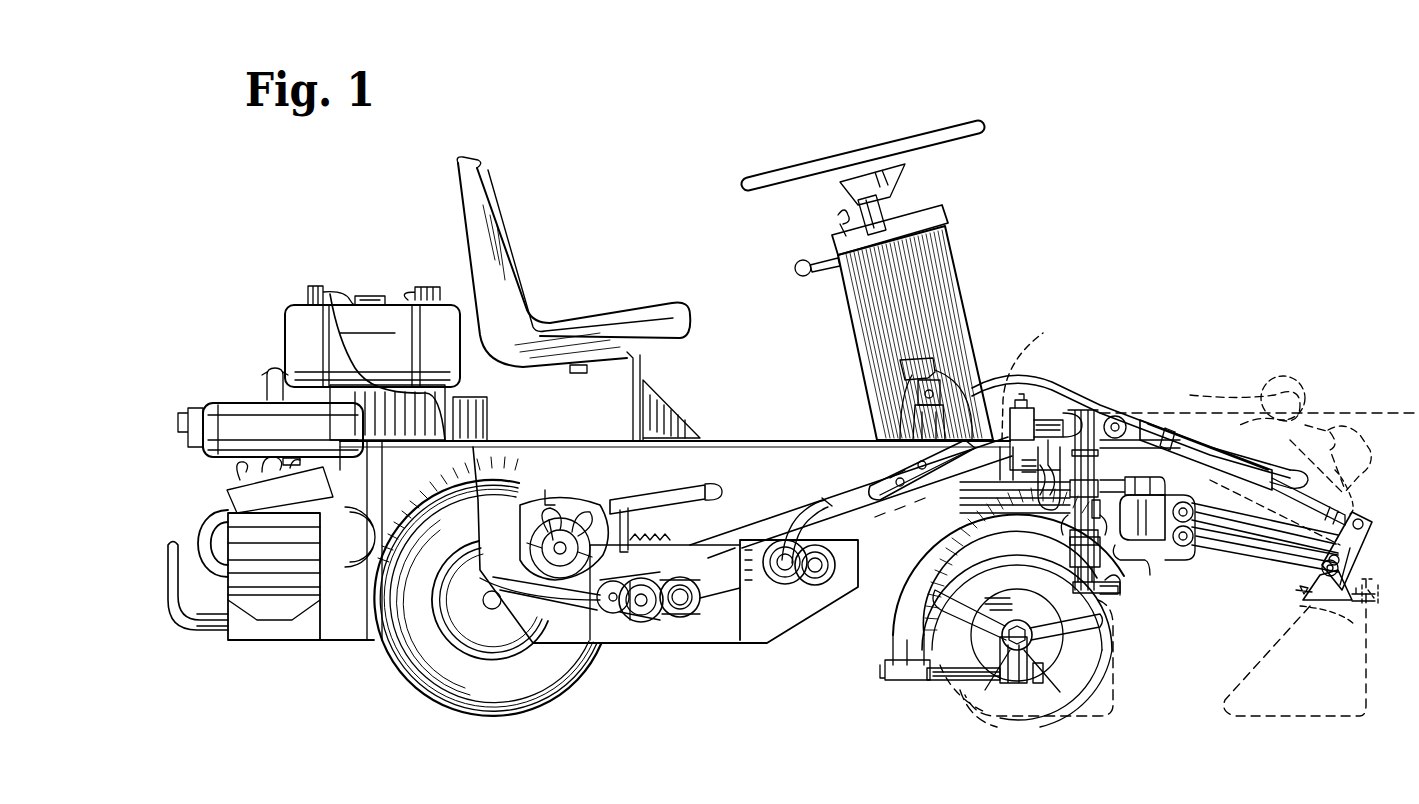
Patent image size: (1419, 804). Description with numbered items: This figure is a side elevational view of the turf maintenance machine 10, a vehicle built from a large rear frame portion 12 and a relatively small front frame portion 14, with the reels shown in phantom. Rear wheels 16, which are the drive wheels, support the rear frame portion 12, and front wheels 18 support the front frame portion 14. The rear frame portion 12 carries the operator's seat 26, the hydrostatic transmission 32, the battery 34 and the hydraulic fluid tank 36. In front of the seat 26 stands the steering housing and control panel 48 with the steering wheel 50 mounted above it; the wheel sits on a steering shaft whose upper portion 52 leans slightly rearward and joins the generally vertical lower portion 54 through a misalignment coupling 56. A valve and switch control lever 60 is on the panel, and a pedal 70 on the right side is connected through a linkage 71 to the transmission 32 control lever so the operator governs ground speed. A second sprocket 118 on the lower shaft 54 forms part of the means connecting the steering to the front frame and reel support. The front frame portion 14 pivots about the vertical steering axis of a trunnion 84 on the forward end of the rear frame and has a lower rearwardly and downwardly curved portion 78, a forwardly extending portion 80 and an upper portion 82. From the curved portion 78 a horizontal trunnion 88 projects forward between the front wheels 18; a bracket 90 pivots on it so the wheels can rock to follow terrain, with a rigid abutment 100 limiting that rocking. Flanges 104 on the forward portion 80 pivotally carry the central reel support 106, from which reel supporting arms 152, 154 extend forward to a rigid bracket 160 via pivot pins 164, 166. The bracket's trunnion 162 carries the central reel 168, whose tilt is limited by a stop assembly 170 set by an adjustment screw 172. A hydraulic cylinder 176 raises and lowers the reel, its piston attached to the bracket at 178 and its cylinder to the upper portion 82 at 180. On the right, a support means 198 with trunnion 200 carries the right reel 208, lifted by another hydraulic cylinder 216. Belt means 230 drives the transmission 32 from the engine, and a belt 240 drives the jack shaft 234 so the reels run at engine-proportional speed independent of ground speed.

The turf maintenance machine 10 is at (648, 158).
The rear frame portion 12 is at (416, 276).
The front frame portion 14 is at (1106, 396).
The rear wheels 16 is at (552, 704).
The front wheels 18 is at (965, 690).
The seat 26 is at (560, 318).
The hydrostatic transmission 32 is at (548, 495).
The battery 34 is at (283, 580).
The hydraulic fluid tank 36 is at (292, 330).
The steering housing and control panel 48 is at (938, 290).
The steering wheel 50 is at (805, 172).
The upper portion of steering shaft 52 is at (950, 372).
The lower portion of steering shaft 54 is at (918, 434).
The misalignment coupling 56 is at (926, 398).
The valve and switch control lever 60 is at (802, 263).
The pedal 70 is at (886, 480).
The linkage 71 is at (778, 528).
The lower curved portion 78 is at (903, 612).
The forwardly extending portion 80 is at (1125, 540).
The upper portion 82 is at (1053, 410).
The trunnion 84 is at (1030, 355).
The horizontally extending trunnion 88 is at (945, 680).
The bracket 90 is at (1030, 665).
The rigid abutment 100 is at (1000, 622).
The flanges 104 is at (1150, 552).
The central reel support 106 is at (1180, 500).
The second sprocket 118 is at (922, 525).
The reel supporting arm 152 is at (1272, 550).
The reel supporting arm 154 is at (1250, 555).
The rigid bracket 160 is at (1355, 548).
The trunnion 162 is at (1372, 600).
The pivot pin 164 is at (1366, 565).
The pivot pin 166 is at (1310, 577).
The central reel 168 is at (1370, 692).
The stop assembly 170 is at (1330, 600).
The adjustment screw 172 is at (1302, 590).
The hydraulic cylinder 176 is at (1200, 452).
The piston connection 178 is at (1358, 520).
The cylinder connection 180 is at (1118, 422).
The support means 198 is at (1080, 575).
The trunnion 200 is at (1115, 590).
The right reel 208 is at (1112, 706).
The hydraulic cylinder 216 is at (1092, 466).
The belt means 230 is at (505, 572).
The jack shaft 234 is at (685, 608).
The belt 240 is at (640, 606).